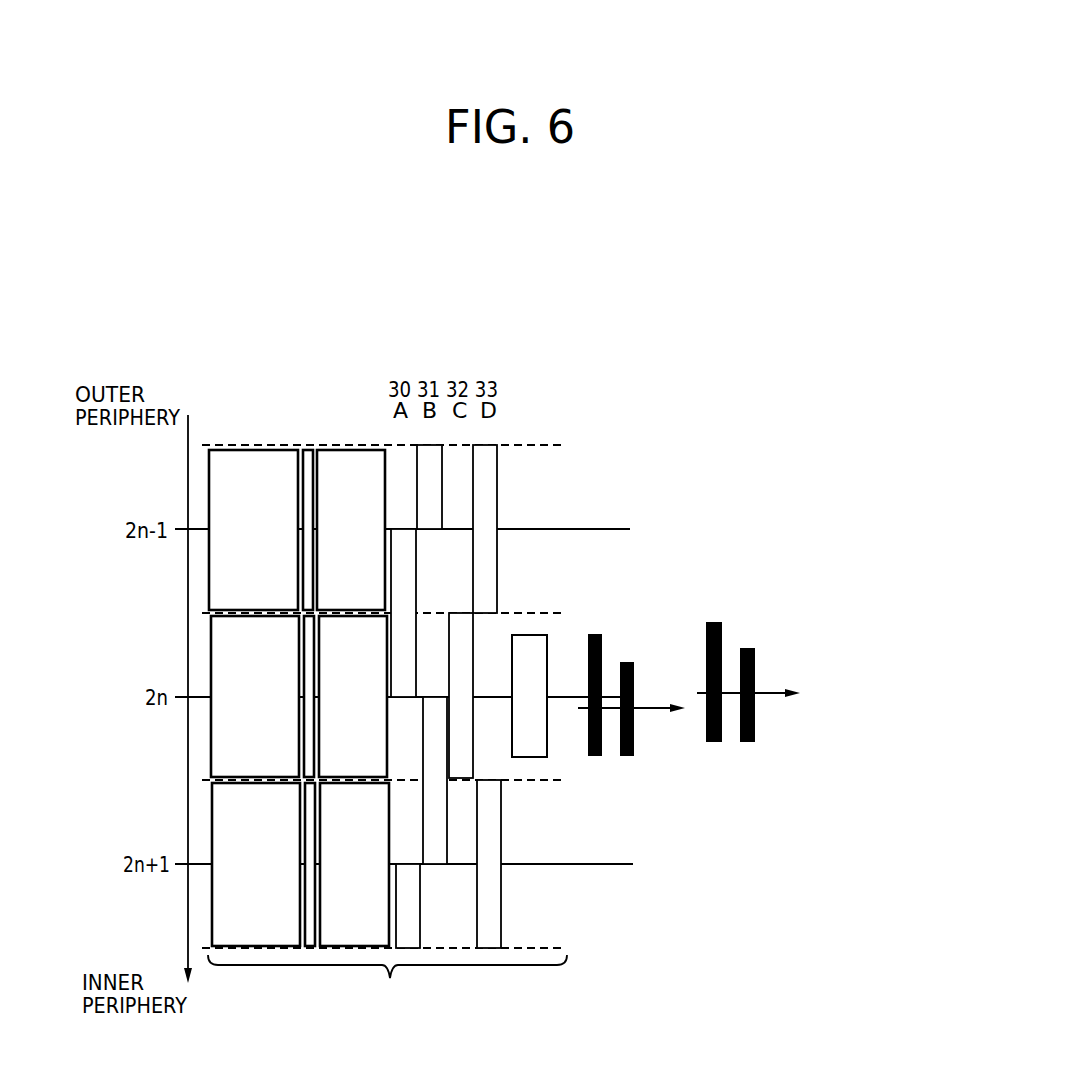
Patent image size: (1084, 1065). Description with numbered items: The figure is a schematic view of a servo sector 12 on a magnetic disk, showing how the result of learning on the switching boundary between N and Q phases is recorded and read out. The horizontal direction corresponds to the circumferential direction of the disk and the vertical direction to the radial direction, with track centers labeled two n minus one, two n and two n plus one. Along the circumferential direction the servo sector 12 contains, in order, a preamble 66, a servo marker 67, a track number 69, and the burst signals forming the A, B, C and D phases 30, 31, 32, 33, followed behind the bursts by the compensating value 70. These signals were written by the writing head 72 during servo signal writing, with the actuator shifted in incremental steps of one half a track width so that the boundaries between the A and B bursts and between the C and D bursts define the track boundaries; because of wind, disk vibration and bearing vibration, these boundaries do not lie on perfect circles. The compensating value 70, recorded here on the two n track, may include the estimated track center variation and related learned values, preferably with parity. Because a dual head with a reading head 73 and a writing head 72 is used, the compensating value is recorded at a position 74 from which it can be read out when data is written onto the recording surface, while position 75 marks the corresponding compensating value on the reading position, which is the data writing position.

The servo sector 12 is at (387, 985).
The A phase burst signal 30 is at (404, 662).
The B phase burst signal 31 is at (431, 620).
The C phase burst signal 32 is at (458, 577).
The D phase burst signal 33 is at (486, 662).
The preamble 66 is at (242, 457).
The servo marker 67 is at (310, 448).
The track number 69 is at (357, 448).
The compensating value 70 is at (530, 635).
The writing head 72 is at (596, 757).
The reading head 73 is at (628, 757).
The compensating value recording position on writing position 74 is at (655, 700).
The compensating value on reading position (data writing position) 75 is at (773, 693).